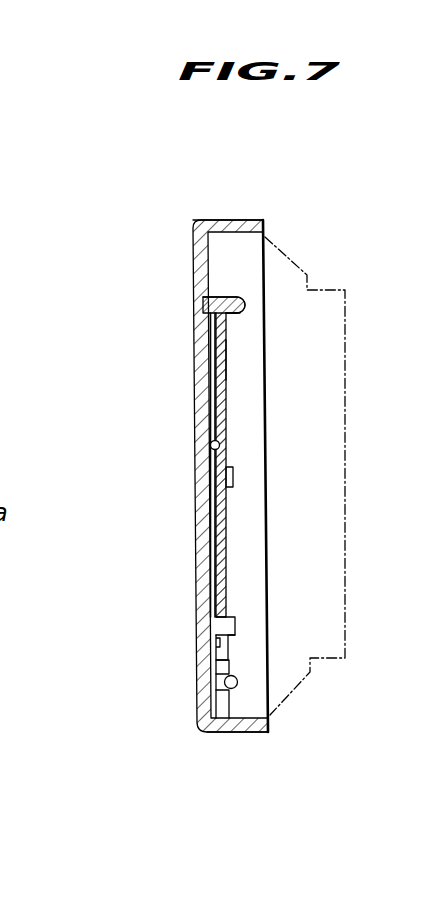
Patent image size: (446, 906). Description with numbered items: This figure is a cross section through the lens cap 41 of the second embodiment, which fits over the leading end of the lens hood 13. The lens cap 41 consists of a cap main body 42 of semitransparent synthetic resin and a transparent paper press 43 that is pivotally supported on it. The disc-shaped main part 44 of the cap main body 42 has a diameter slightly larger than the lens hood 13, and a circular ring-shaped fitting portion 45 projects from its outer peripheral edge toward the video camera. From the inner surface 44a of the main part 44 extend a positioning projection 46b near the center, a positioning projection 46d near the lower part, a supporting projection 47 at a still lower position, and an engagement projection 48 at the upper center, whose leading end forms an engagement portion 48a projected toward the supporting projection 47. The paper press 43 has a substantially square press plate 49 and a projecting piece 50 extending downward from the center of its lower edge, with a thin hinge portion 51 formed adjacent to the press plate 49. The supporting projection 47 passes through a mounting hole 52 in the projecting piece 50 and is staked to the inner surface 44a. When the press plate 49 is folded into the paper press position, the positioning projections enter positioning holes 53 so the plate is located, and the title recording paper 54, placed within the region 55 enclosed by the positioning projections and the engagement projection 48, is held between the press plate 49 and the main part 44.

The lens hood 13 is at (346, 522).
The lens cap 41 is at (168, 218).
The cap main body 42 is at (193, 256).
The paper press 43 is at (227, 391).
The main part 44 is at (217, 565).
The inner surface 44a is at (263, 240).
The fitting portion 45 is at (243, 220).
The positioning projection 46b is at (234, 477).
The positioning projection 46d is at (232, 627).
The supporting projection 47 is at (238, 680).
The engagement projection 48 is at (226, 298).
The engagement portion 48a is at (233, 316).
The press plate 49 is at (224, 363).
The projecting piece 50 is at (240, 697).
The thin hinge portion 51 is at (230, 663).
The mounting hole 52 is at (216, 680).
The positioning hole 53 is at (233, 618).
The title recording paper 54 is at (211, 504).
The region 55 is at (211, 449).